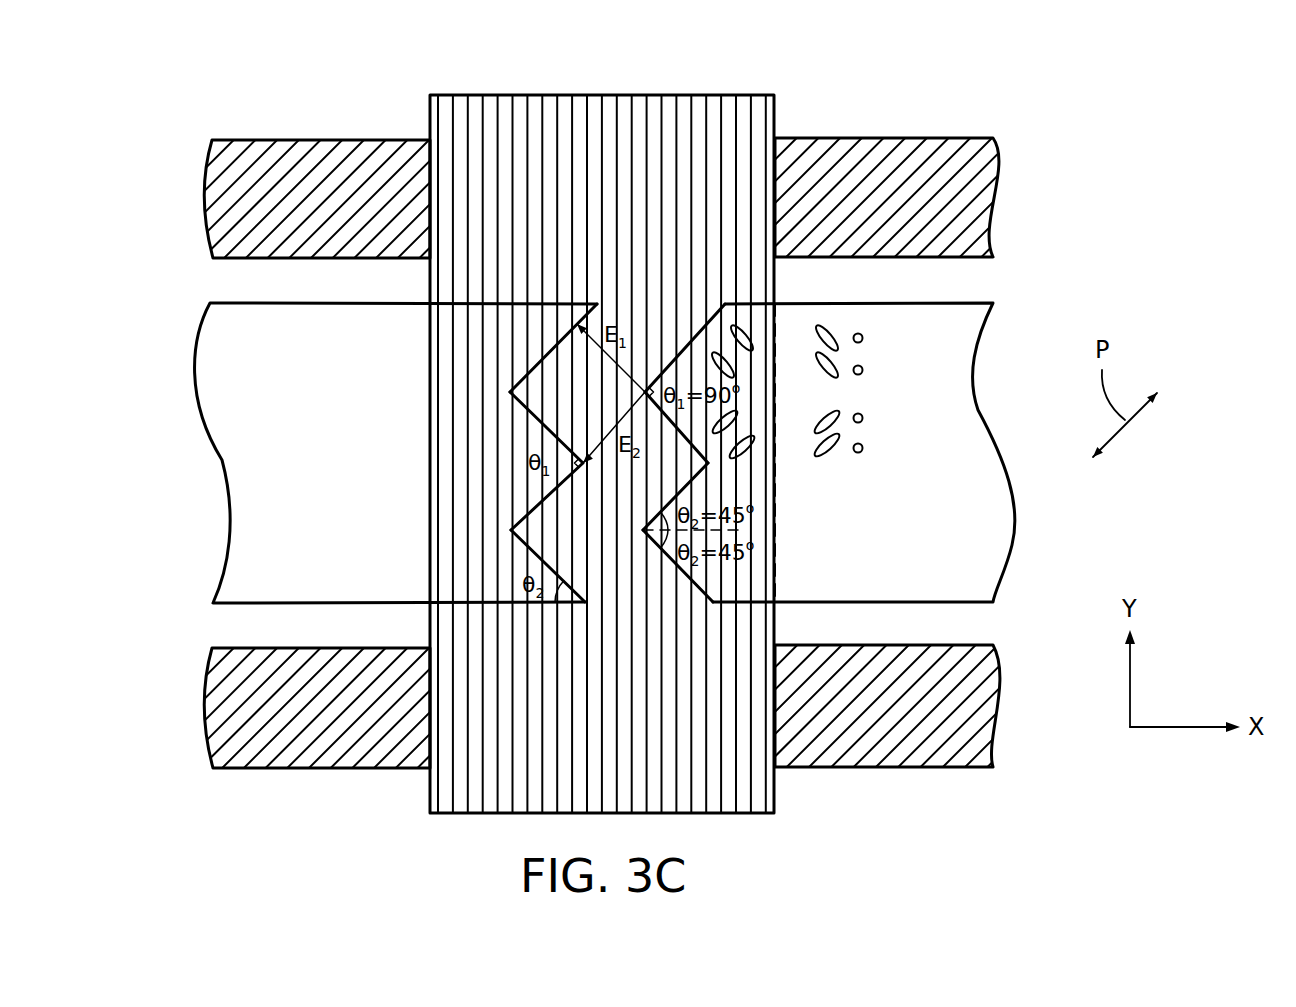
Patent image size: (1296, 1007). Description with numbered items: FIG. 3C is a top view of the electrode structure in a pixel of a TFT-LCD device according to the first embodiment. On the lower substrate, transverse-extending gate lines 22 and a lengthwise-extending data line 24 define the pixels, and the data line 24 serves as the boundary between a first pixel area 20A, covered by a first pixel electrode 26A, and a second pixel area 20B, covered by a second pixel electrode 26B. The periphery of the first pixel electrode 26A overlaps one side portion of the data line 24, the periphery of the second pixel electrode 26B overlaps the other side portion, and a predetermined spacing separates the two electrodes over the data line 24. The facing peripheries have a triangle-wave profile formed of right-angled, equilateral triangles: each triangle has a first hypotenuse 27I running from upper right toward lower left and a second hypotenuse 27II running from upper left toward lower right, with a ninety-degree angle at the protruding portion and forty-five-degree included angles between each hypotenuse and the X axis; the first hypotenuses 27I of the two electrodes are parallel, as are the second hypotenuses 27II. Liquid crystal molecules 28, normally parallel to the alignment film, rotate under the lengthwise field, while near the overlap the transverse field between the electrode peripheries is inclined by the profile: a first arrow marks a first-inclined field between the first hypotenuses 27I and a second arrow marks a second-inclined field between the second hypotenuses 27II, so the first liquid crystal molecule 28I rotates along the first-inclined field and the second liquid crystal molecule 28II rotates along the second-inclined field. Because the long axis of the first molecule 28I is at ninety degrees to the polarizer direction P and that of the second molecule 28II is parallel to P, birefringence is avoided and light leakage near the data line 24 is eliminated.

The first pixel area 20A is at (894, 412).
The second pixel area 20B is at (362, 414).
The gate line 22 is at (872, 155).
The data line 24 is at (617, 95).
The first pixel electrode 26A is at (974, 429).
The second pixel electrode 26B is at (372, 433).
The first hypotenuse 27I is at (535, 508).
The second hypotenuse 27II is at (536, 555).
The liquid crystal molecules 28 is at (860, 333).
The first liquid crystal molecule 28I is at (745, 330).
The second liquid crystal molecule 28II is at (754, 440).